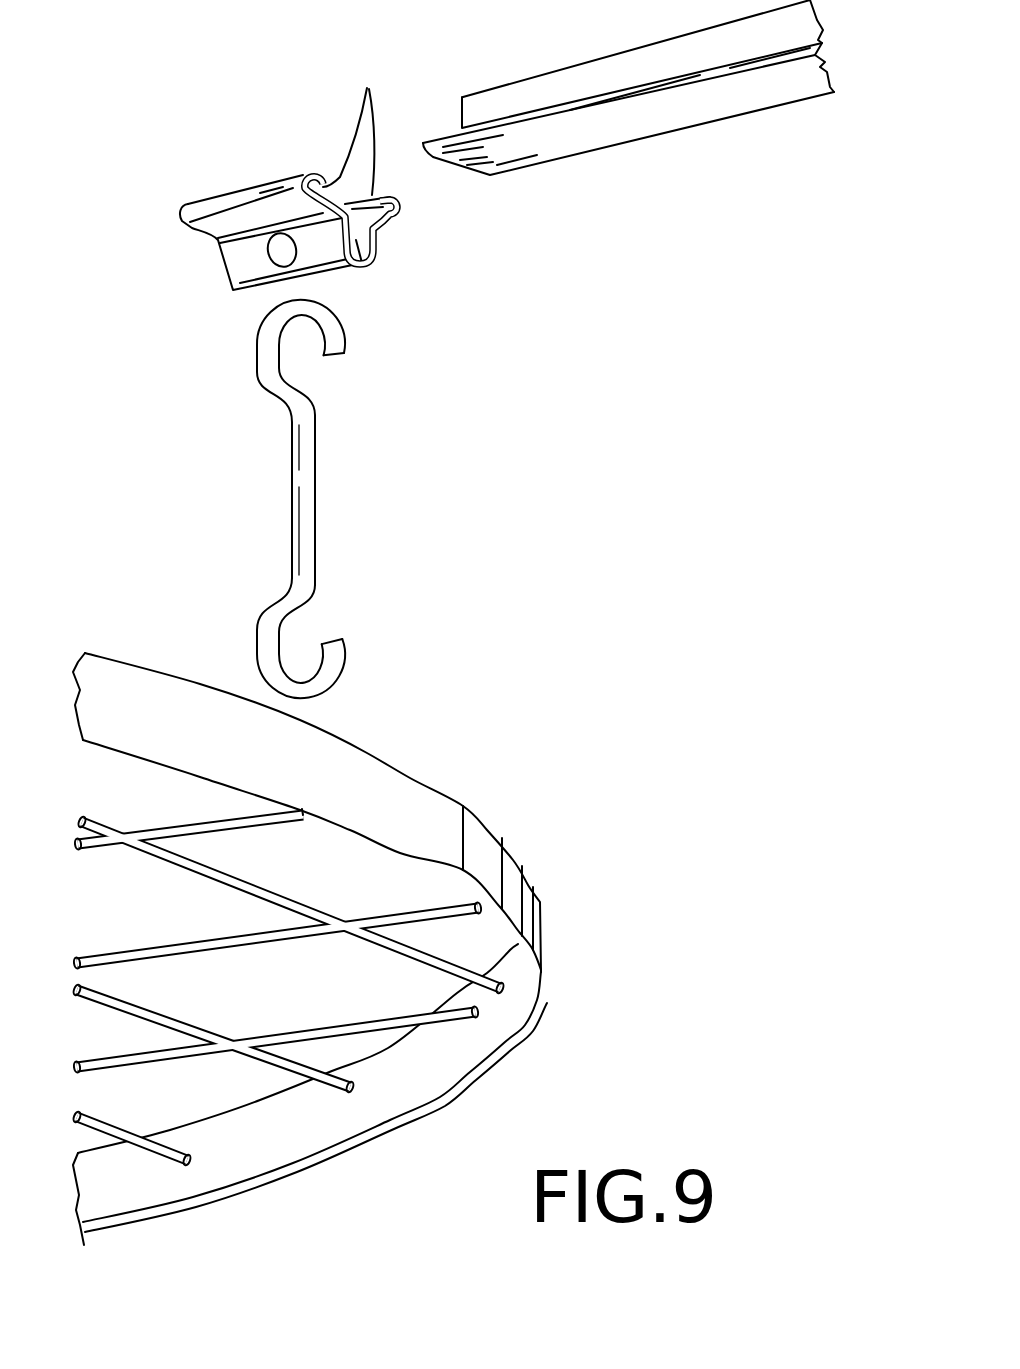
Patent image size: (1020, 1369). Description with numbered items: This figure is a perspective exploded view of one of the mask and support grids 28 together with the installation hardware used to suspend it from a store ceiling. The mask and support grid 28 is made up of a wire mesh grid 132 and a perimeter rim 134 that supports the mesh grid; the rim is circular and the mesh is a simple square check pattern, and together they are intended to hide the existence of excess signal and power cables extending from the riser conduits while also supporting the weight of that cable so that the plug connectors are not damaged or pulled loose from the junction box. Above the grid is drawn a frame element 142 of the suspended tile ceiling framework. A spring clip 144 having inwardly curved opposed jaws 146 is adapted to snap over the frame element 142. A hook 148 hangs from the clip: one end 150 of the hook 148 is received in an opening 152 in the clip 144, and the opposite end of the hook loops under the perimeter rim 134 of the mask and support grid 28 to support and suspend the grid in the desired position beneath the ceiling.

The mask and support grid 28 is at (400, 949).
The wire mesh grid 132 is at (248, 815).
The perimeter rim 134 is at (417, 807).
The frame element 142 is at (632, 117).
The spring clip 144 is at (253, 195).
The inwardly curved opposed jaws 146 is at (357, 155).
The hook 148 is at (296, 499).
The one end of hook 150 is at (257, 334).
The opening 152 is at (263, 660).